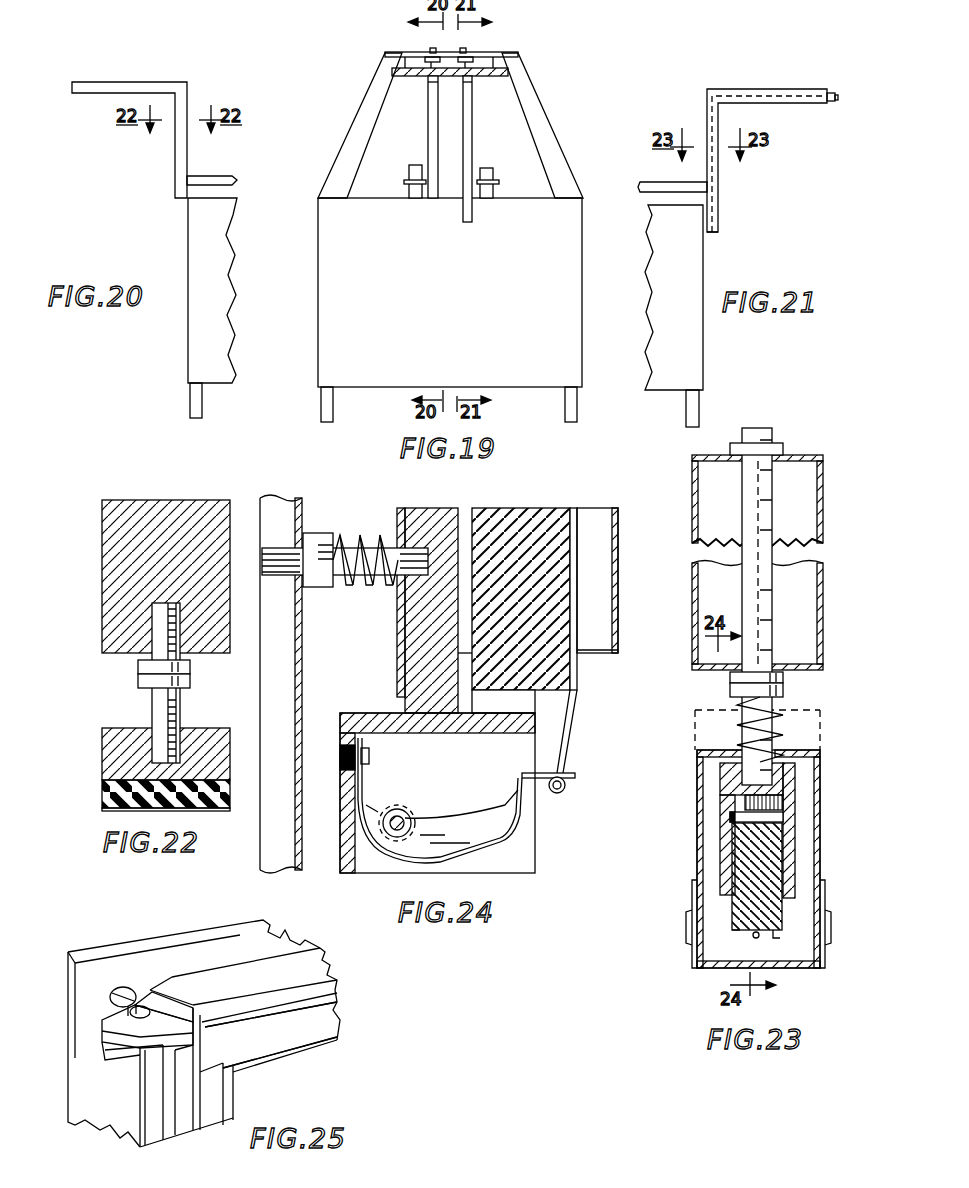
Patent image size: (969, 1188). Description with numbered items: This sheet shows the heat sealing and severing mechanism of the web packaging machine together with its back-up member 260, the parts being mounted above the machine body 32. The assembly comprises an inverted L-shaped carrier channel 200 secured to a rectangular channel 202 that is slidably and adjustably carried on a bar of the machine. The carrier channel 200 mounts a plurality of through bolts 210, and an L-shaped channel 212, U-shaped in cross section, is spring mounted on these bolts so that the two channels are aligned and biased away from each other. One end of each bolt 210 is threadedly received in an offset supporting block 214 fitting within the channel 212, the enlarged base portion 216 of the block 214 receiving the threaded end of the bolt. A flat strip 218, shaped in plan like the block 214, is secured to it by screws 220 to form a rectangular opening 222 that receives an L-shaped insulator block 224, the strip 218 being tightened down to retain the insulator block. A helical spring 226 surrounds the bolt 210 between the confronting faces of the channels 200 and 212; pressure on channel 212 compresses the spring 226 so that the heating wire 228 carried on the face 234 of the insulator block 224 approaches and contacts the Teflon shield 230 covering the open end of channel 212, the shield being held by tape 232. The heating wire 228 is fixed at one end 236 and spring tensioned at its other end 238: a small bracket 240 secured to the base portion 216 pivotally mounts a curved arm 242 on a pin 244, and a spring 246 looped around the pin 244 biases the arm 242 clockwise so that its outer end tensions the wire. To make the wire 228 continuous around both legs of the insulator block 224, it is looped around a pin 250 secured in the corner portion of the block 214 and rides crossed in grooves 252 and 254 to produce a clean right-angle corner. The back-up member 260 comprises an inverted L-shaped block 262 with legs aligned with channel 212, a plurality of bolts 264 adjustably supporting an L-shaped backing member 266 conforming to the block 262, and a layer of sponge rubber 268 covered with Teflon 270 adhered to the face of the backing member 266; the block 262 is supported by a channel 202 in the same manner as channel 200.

In FIG. 19, the container 32 is at (458, 300).
In FIG. 20, the container 32 is at (220, 293).
In FIG. 21, the container 32 is at (682, 305).
In FIG. 19, the inverted L-shaped carrier channel 200 is at (472, 156).
In FIG. 24, the inverted L-shaped carrier channel 200 is at (302, 630).
In FIG. 23, the inverted L-shaped carrier channel 200 is at (821, 577).
In FIG. 20, the rectangular channel 202 is at (221, 178).
In FIG. 21, the rectangular channel 202 is at (660, 182).
In FIG. 24, the through bolt 210 is at (288, 557).
In FIG. 23, the through bolt 210 is at (748, 514).
In FIG. 24, the L-shaped channel 212 is at (398, 641).
In FIG. 23, the L-shaped channel 212 is at (700, 742).
In FIG. 23, the offset supporting block 214 is at (722, 889).
In FIG. 25, the offset supporting block 214 is at (104, 1018).
In FIG. 24, the base portion 216 is at (418, 671).
In FIG. 23, the base portion 216 is at (735, 790).
In FIG. 23, the flat strip 218 is at (796, 779).
In FIG. 23, the screws 220 is at (790, 806).
In FIG. 23, the rectangular opening 222 is at (775, 823).
In FIG. 24, the L-shaped insulator block 224 is at (560, 683).
In FIG. 23, the L-shaped insulator block 224 is at (736, 931).
In FIG. 25, the L-shaped insulator block 224 is at (320, 1025).
In FIG. 24, the helical spring 226 is at (363, 541).
In FIG. 23, the helical spring 226 is at (737, 703).
In FIG. 21, the heating wire 228 is at (718, 193).
In FIG. 24, the heating wire 228 is at (568, 726).
In FIG. 23, the heating wire 228 is at (757, 941).
In FIG. 25, the heating wire 228 is at (335, 1020).
In FIG. 21, the Teflon shield 230 is at (716, 176).
In FIG. 24, the Teflon shield 230 is at (620, 617).
In FIG. 23, the Teflon shield 230 is at (708, 969).
In FIG. 23, the tape 232 is at (690, 934).
In FIG. 23, the face 234 is at (776, 936).
In FIG. 21, the fixed end 236 is at (829, 92).
In FIG. 21, the spring tensioned end 238 is at (719, 231).
In FIG. 24, the bracket 240 is at (341, 875).
In FIG. 24, the curved arm 242 is at (490, 838).
In FIG. 24, the pin 244 is at (402, 815).
In FIG. 24, the spring 246 is at (372, 810).
In FIG. 25, the pin 250 is at (128, 986).
In FIG. 25, the groove 252 is at (165, 993).
In FIG. 25, the groove 254 is at (105, 1052).
In FIG. 19, the back-up member 260 is at (428, 151).
In FIG. 22, the inverted L-shaped block 262 is at (112, 541).
In FIG. 22, the bolts 264 is at (155, 709).
In FIG. 22, the L-shaped backing member 266 is at (105, 752).
In FIG. 22, the sponge rubber layer 268 is at (105, 797).
In FIG. 20, the Teflon covering 270 is at (178, 160).
In FIG. 22, the Teflon covering 270 is at (110, 813).